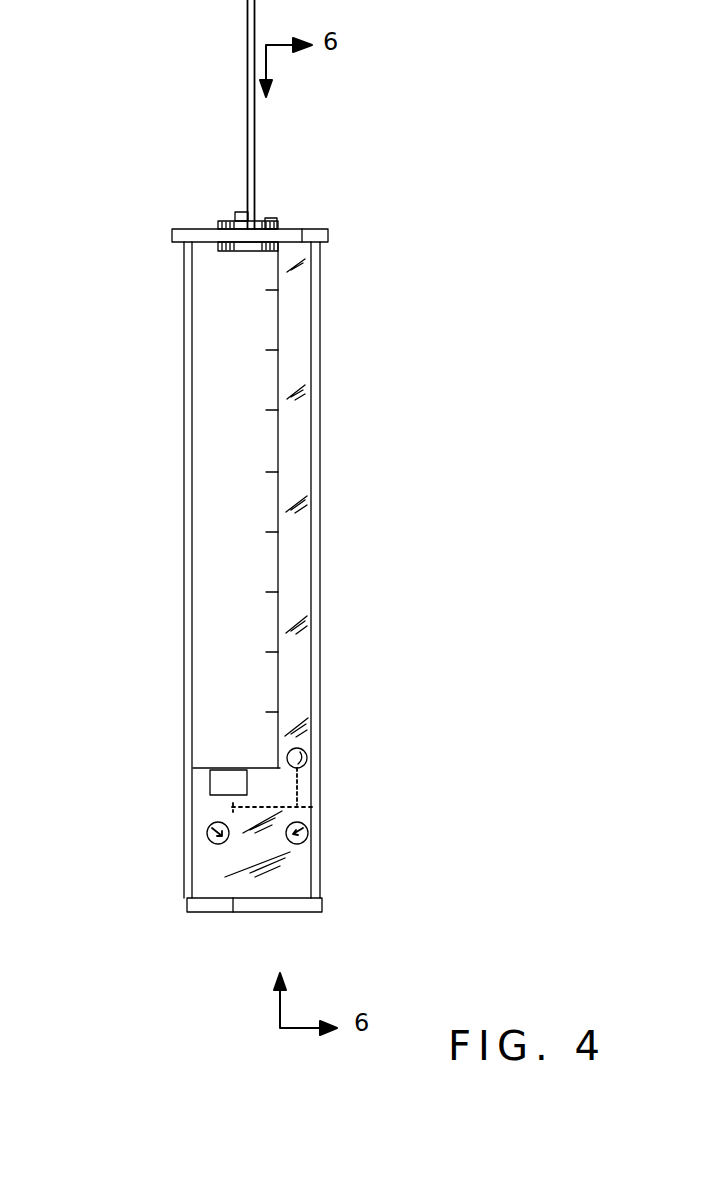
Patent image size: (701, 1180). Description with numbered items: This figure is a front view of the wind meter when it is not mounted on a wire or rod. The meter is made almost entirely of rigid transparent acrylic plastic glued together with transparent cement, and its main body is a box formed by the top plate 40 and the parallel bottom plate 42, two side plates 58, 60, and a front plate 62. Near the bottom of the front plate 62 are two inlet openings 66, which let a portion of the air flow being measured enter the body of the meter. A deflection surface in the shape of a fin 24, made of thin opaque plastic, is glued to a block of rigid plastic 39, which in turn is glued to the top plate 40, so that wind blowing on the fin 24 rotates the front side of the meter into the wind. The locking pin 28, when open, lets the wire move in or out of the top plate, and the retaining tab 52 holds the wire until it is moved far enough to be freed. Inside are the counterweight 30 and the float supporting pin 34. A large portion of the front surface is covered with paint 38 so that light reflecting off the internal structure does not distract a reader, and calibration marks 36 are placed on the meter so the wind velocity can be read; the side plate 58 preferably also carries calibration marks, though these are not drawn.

The fin 24 is at (246, 80).
The locking pin 28 is at (277, 219).
The counterweight 30 is at (220, 249).
The float supporting pin 34 is at (306, 752).
The calibration marks 36 is at (275, 292).
The paint 38 is at (217, 497).
The block of rigid plastic 39 is at (237, 212).
The top plate 40 is at (328, 240).
The bottom plate 42 is at (187, 912).
The retaining tab 52 is at (210, 780).
The side plate 58 is at (320, 480).
The side plate 60 is at (184, 577).
The front plate 62 is at (255, 615).
The inlet openings 66 is at (207, 833).